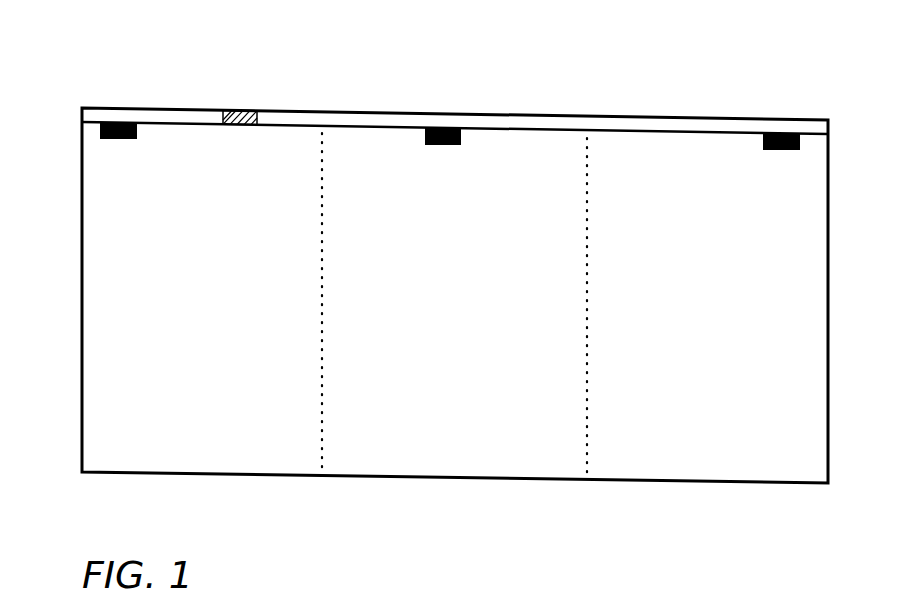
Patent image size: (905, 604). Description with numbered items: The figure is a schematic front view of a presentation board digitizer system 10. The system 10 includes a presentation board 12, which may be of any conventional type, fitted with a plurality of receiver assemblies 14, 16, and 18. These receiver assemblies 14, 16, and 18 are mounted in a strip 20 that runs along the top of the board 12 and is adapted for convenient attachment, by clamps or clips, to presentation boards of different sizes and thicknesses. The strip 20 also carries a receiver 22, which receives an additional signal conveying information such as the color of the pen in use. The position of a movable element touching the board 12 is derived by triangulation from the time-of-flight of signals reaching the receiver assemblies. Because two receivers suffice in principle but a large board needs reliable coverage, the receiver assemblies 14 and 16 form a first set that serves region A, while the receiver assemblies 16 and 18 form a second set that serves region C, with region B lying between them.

The presentation board digitizer system 10 is at (578, 52).
The presentation board 12 is at (82, 317).
The receiver assembly 14 is at (118, 122).
The receiver assembly 16 is at (445, 128).
The receiver assembly 18 is at (775, 134).
The strip 20 is at (324, 120).
The receiver 22 is at (245, 110).